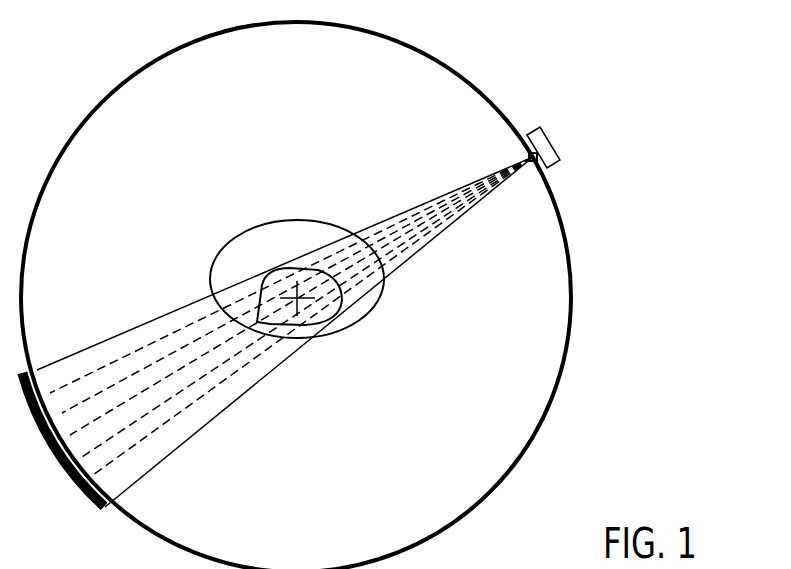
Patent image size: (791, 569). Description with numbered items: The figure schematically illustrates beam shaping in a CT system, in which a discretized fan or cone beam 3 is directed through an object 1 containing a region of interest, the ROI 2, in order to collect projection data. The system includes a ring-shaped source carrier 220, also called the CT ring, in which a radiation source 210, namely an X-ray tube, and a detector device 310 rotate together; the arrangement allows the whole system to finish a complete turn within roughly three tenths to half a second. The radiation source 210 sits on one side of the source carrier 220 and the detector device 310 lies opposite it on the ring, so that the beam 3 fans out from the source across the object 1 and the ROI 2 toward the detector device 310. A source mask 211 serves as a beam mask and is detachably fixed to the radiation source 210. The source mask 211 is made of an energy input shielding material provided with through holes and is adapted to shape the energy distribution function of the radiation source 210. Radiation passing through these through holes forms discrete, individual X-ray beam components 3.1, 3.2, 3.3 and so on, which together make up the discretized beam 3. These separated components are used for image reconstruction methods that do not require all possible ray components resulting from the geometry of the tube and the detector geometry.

The object 1 is at (380, 297).
The ROI 2 is at (340, 295).
The discretized fan or cone beam 3 is at (285, 333).
The X-ray beam component 3.1 is at (140, 448).
The X-ray beam component 3.2 is at (160, 405).
The X-ray beam component 3.3 is at (178, 368).
The radiation source 210 is at (543, 143).
The source mask 211 is at (547, 166).
The ring-shaped source carrier 220 is at (560, 387).
The detector device 310 is at (92, 500).